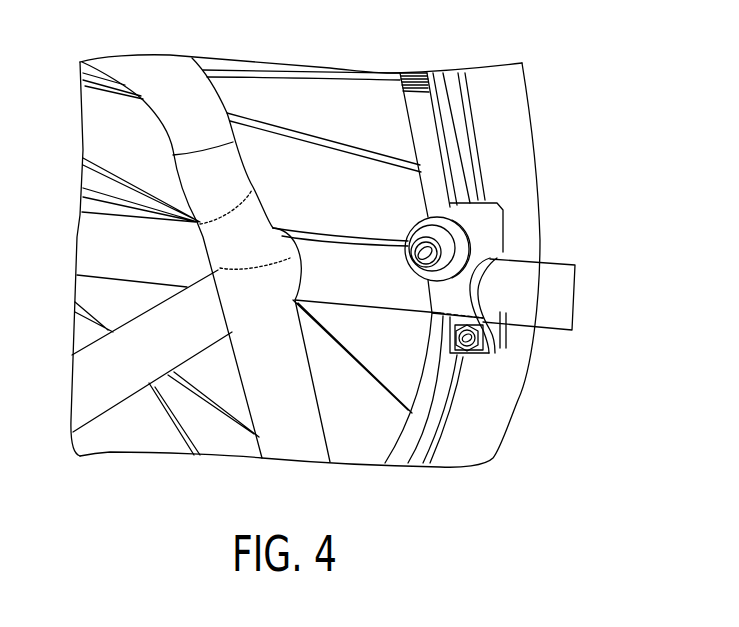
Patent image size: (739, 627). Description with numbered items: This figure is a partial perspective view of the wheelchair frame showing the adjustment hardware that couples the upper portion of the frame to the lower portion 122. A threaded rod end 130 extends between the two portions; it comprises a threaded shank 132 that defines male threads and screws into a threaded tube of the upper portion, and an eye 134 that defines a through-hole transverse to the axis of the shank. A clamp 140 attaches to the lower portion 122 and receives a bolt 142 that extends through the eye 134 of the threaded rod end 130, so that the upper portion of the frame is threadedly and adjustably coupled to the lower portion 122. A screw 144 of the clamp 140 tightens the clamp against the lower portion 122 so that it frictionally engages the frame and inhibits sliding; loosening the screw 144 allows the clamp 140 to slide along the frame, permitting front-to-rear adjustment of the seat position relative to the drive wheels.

The lower portion 122 is at (563, 292).
The threaded rod end 130 is at (413, 133).
The threaded shank 132 is at (425, 73).
The eye 134 is at (390, 267).
The clamp 140 is at (497, 228).
The bolt 142 is at (420, 233).
The screw 144 is at (490, 352).